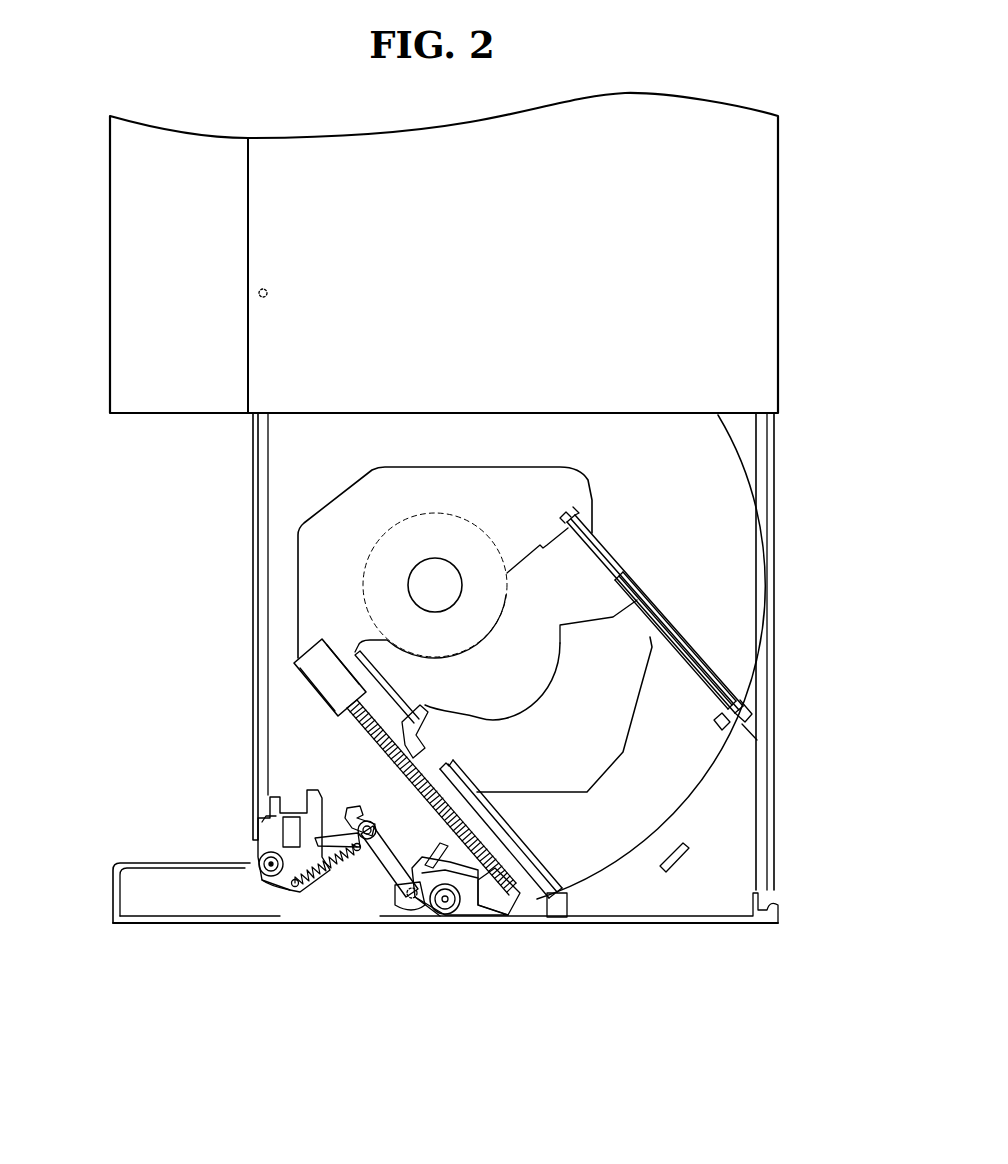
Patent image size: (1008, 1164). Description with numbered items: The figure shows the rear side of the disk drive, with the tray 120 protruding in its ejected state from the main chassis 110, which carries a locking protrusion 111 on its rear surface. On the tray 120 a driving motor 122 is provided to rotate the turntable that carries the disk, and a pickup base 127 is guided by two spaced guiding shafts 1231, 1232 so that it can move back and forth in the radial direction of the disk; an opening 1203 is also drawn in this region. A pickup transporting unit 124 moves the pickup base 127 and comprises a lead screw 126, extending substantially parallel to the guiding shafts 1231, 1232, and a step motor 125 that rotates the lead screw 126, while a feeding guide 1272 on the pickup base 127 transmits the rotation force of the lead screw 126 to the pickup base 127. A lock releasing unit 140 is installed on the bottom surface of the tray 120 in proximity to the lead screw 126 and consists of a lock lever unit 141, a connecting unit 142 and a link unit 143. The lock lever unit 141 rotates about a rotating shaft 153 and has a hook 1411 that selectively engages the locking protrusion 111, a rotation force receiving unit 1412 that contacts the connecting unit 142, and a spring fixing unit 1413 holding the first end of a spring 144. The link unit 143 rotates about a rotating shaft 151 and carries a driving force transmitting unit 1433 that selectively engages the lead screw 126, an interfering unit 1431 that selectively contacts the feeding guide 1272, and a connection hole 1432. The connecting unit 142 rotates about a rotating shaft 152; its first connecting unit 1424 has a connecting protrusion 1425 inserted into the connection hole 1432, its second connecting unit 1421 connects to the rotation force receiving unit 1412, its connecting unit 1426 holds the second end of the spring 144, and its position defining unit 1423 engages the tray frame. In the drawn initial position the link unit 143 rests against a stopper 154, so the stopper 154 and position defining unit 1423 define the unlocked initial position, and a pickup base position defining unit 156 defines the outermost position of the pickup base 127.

The main chassis 110 is at (786, 280).
The locking protrusion 111 is at (259, 293).
The tray 120 is at (246, 522).
The driving motor 122 is at (506, 592).
The opening of pickup base 1203 is at (470, 687).
The feeding guide 1272 is at (413, 753).
The pickup transporting unit 124 is at (194, 640).
The step motor 125 is at (303, 662).
The lead screw 126 is at (350, 712).
The guiding shaft 1231 is at (700, 690).
The guiding shaft 1232 is at (510, 833).
The pickup base 127 is at (605, 766).
The lock releasing unit 140 is at (137, 813).
The lock lever unit 141 is at (270, 888).
The hook 1411 is at (270, 810).
The rotation force receiving unit 1412 is at (308, 892).
The spring fixing unit 1413 is at (296, 890).
The connecting unit 142 is at (313, 868).
The second connecting unit 1421 is at (347, 810).
The position defining unit 1423 is at (356, 818).
The first connecting unit 1424 is at (390, 884).
The connecting protrusion 1425 is at (410, 887).
The connecting unit 1426 is at (420, 910).
The link unit 143 is at (499, 927).
The interfering unit 1431 is at (527, 893).
The connection hole 1432 is at (428, 910).
The driving force transmitting unit 1433 is at (430, 857).
The spring 144 is at (320, 875).
The rotating shaft 151 is at (449, 908).
The rotating shaft 152 is at (372, 822).
The rotating shaft 153 is at (258, 857).
The stopper 154 is at (429, 954).
The pickup base position defining unit 156 is at (674, 873).